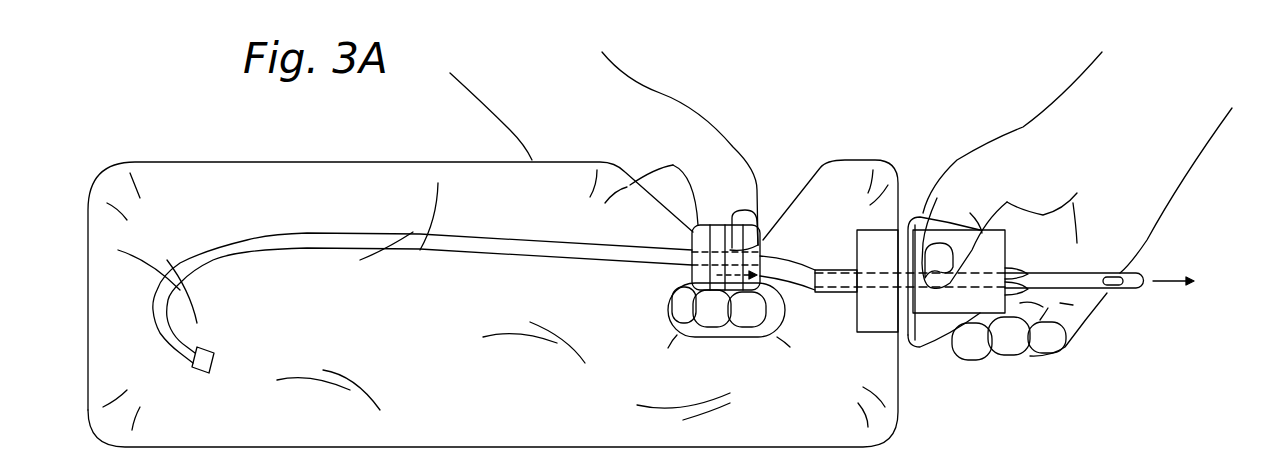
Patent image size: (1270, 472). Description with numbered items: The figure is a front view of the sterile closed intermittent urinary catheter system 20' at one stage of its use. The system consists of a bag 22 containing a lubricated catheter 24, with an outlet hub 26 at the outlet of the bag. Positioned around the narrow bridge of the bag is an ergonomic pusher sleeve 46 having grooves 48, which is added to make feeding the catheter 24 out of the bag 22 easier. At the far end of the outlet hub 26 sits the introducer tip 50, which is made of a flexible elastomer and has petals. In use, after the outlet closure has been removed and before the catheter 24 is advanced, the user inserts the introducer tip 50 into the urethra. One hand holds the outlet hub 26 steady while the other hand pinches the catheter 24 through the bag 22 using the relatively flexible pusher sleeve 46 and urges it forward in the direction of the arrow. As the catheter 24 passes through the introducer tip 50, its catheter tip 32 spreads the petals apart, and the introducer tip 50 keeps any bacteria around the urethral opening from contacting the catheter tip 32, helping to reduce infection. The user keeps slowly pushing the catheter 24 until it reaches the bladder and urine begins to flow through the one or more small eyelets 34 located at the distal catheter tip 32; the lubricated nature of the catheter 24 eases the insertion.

The sterile closed intermittent urinary catheter system 20' is at (487, 255).
The bag 22 is at (218, 162).
The catheter 24 is at (307, 237).
The outlet hub 26 is at (920, 347).
The catheter tip 32 is at (1128, 288).
The eyelets 34 is at (1120, 280).
The pusher sleeve 46 is at (693, 237).
The grooves 48 is at (677, 275).
The introducer tip 50 is at (1022, 268).